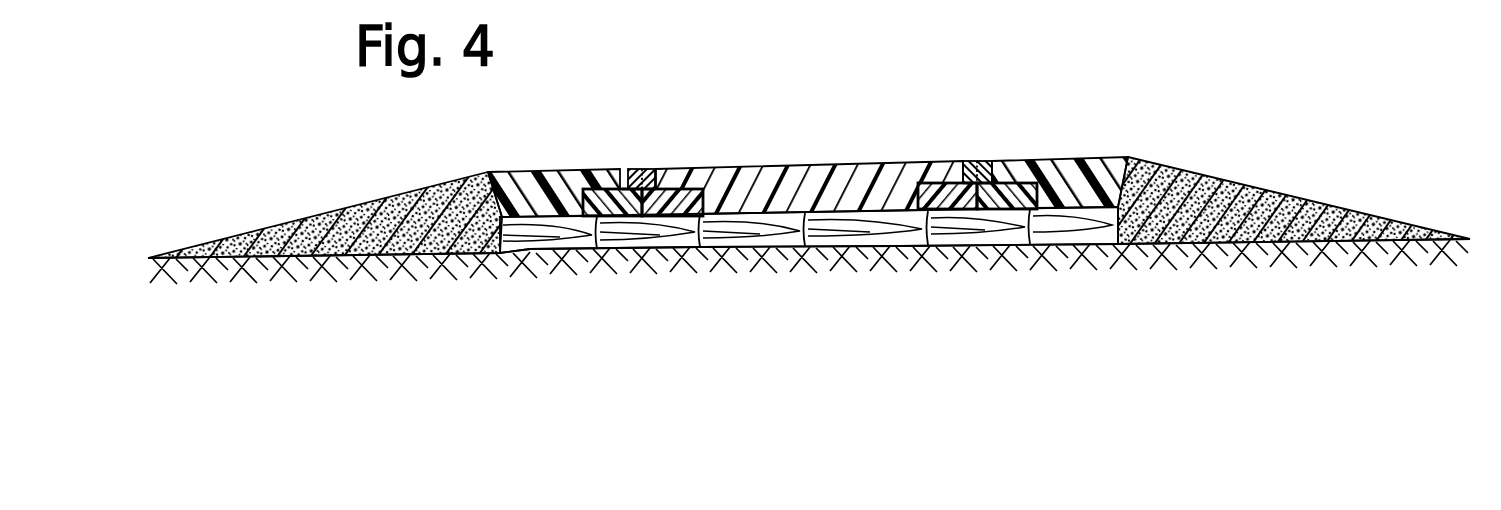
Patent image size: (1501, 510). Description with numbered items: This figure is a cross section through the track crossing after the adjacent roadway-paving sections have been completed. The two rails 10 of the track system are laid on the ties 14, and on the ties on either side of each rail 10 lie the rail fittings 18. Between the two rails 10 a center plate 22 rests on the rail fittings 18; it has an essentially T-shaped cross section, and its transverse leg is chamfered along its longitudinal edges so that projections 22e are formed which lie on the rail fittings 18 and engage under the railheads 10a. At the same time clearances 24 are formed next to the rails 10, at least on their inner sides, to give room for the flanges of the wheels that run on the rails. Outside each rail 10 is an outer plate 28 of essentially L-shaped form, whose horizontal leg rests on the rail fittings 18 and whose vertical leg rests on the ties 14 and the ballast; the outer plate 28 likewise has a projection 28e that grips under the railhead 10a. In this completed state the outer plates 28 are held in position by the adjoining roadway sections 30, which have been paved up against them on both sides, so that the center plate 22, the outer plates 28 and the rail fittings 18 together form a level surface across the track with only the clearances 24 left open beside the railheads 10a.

The rail 10 is at (646, 217).
The railhead 10a is at (642, 168).
The tie 14 is at (800, 228).
The rail fitting 18 is at (597, 235).
The center plate 22 is at (795, 167).
The projection 22e is at (675, 168).
The clearance 24 is at (658, 168).
The outer plate 28 is at (523, 168).
The projection 28e is at (620, 168).
The roadway section 30 is at (360, 207).